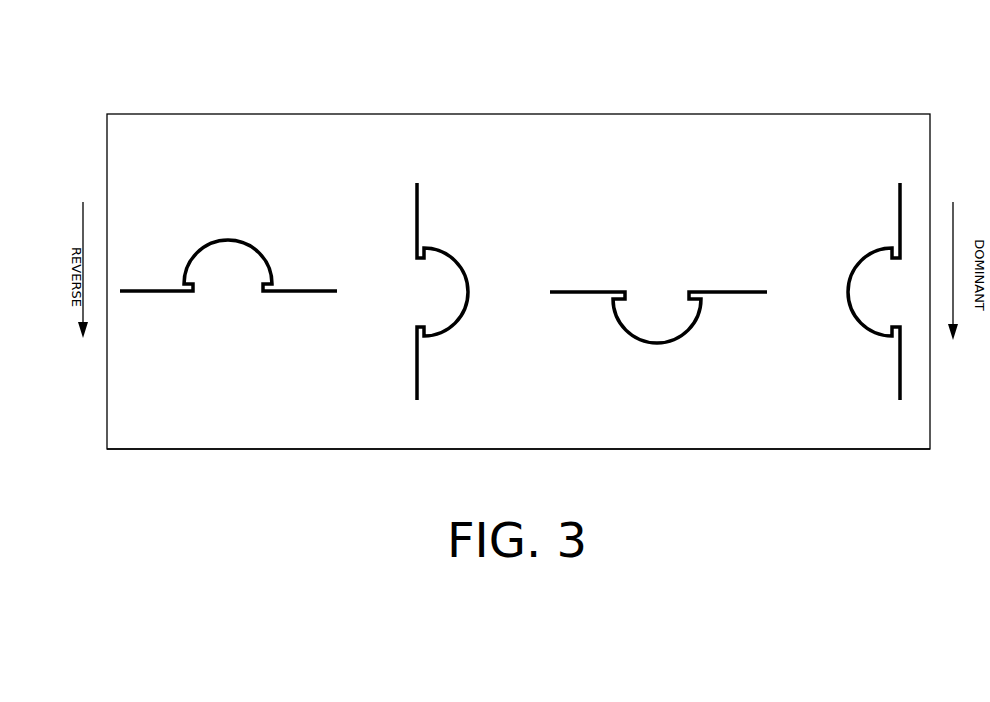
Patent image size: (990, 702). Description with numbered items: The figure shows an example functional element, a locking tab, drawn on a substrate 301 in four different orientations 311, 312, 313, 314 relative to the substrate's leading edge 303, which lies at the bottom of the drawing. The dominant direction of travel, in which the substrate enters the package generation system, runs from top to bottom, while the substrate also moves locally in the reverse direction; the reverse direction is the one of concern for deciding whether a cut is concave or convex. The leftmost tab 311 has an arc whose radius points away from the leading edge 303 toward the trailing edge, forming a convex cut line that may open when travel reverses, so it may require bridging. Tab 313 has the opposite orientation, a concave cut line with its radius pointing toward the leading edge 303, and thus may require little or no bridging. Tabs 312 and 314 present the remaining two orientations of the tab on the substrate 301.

The substrate 301 is at (182, 93).
The leading edge 303 is at (290, 450).
The tab orientation (leftmost tab) 311 is at (225, 240).
The tab orientation 312 is at (443, 248).
The tab orientation 313 is at (600, 292).
The tab orientation 314 is at (872, 247).